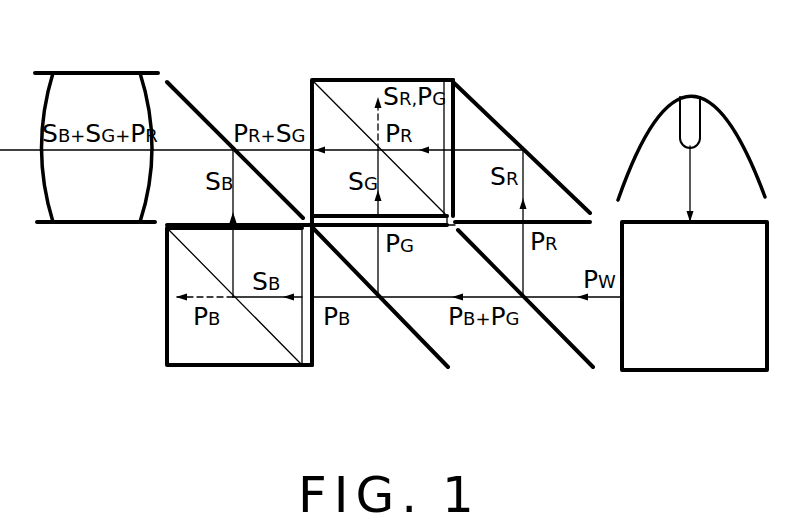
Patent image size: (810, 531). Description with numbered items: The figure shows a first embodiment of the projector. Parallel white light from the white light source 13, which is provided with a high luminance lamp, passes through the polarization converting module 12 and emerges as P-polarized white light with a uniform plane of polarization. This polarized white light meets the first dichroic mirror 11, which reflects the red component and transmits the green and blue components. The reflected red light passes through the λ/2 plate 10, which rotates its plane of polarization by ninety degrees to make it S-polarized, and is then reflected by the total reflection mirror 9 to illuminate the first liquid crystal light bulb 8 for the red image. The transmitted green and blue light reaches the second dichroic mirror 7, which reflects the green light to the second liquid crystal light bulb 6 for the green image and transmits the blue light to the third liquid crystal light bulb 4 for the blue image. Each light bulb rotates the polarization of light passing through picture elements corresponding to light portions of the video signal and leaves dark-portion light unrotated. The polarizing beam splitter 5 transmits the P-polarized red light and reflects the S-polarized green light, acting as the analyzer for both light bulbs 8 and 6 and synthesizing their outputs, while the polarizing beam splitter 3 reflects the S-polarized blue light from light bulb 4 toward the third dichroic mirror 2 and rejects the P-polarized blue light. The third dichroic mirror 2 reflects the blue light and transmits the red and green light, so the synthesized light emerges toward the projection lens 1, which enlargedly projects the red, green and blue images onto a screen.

The projection lens 1 is at (72, 214).
The third dichroic mirror 2 is at (177, 90).
The polarizing beam splitter 3 is at (180, 246).
The third liquid crystal light bulb 4 is at (313, 348).
The polarizing beam splitter 5 is at (330, 79).
The second liquid crystal light bulb 6 is at (423, 223).
The second dichroic mirror 7 is at (420, 343).
The first liquid crystal light bulb 8 is at (447, 80).
The total reflection mirror 9 is at (500, 115).
The λ/2 plate 10 is at (590, 222).
The first dichroic mirror 11 is at (572, 343).
The polarization converting module 12 is at (695, 372).
The white light source 13 is at (735, 120).